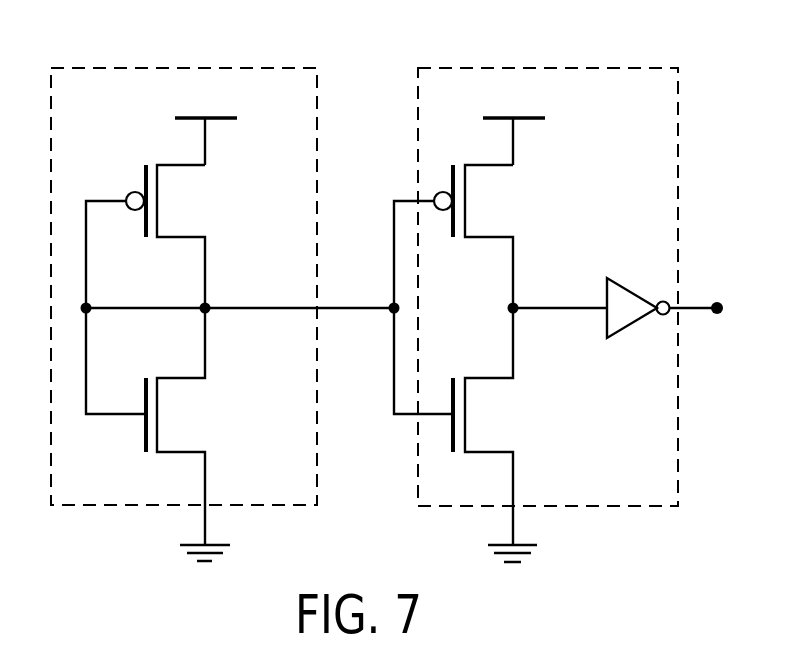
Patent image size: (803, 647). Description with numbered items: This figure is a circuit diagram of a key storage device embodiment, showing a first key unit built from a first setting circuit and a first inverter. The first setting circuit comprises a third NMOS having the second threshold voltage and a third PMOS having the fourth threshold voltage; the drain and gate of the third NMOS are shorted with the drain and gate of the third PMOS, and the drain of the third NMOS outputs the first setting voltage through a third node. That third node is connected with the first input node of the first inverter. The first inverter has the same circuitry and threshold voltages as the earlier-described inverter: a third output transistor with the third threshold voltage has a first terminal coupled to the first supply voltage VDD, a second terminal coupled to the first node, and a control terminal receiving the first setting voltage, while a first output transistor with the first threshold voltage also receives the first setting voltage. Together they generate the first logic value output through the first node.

The first supply voltage VDD is at (391, 134).